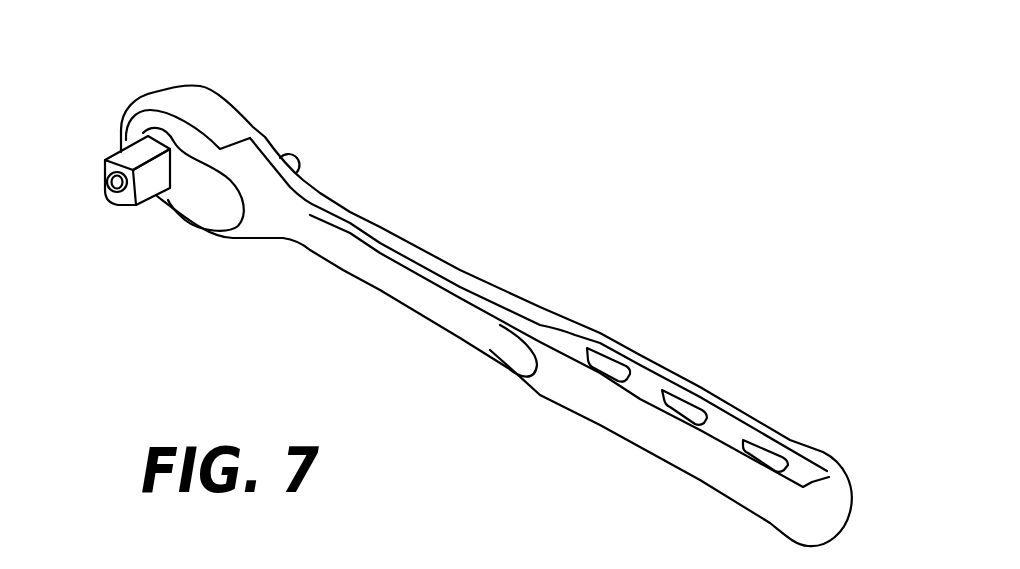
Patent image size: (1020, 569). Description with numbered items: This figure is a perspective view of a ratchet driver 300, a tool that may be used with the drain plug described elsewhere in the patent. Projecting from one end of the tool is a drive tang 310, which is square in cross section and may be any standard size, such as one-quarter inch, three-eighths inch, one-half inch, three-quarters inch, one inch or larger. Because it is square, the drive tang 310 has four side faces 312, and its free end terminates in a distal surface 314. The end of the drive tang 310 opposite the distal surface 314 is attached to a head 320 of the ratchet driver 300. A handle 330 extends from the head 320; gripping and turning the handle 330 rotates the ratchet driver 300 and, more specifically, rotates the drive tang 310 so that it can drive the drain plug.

The ratchet driver 300 is at (627, 168).
The drive tang 310 is at (123, 210).
The side faces 312 is at (130, 154).
The distal surface 314 is at (113, 198).
The head 320 is at (200, 107).
The handle 330 is at (730, 422).